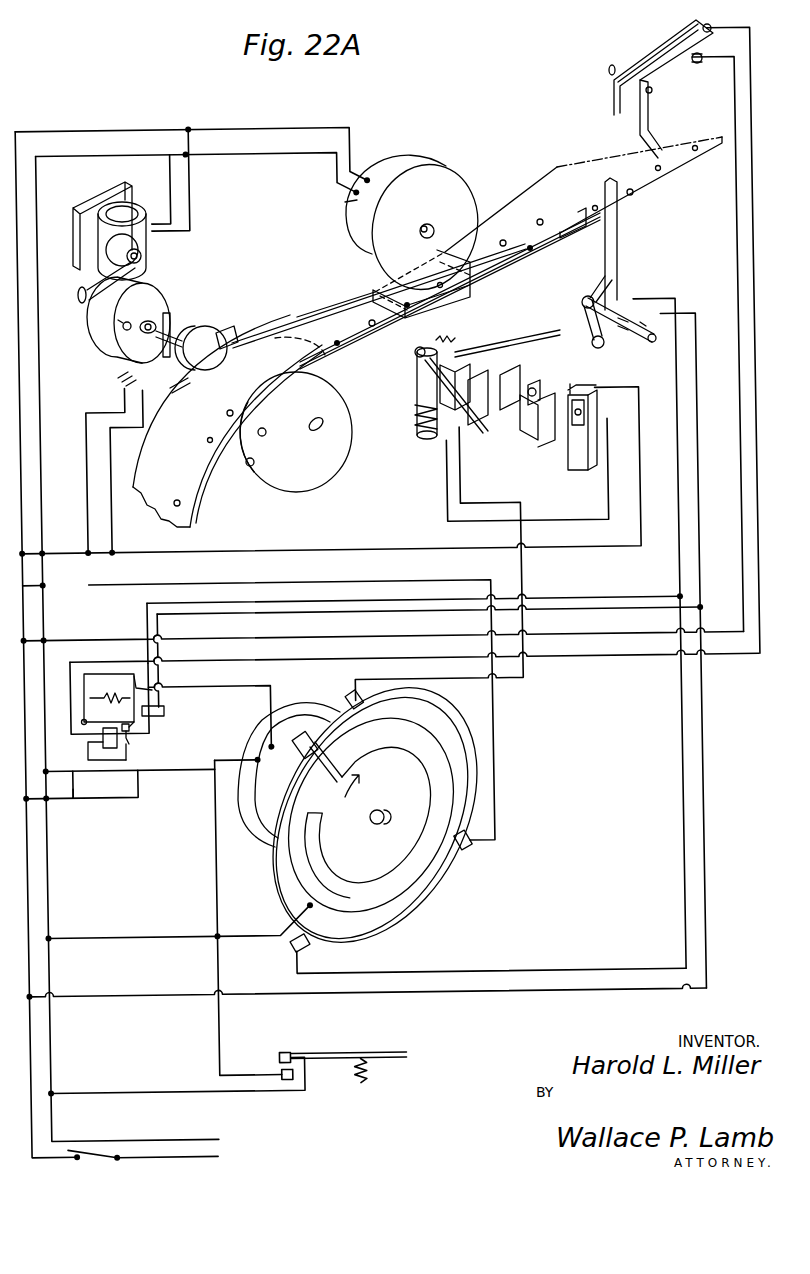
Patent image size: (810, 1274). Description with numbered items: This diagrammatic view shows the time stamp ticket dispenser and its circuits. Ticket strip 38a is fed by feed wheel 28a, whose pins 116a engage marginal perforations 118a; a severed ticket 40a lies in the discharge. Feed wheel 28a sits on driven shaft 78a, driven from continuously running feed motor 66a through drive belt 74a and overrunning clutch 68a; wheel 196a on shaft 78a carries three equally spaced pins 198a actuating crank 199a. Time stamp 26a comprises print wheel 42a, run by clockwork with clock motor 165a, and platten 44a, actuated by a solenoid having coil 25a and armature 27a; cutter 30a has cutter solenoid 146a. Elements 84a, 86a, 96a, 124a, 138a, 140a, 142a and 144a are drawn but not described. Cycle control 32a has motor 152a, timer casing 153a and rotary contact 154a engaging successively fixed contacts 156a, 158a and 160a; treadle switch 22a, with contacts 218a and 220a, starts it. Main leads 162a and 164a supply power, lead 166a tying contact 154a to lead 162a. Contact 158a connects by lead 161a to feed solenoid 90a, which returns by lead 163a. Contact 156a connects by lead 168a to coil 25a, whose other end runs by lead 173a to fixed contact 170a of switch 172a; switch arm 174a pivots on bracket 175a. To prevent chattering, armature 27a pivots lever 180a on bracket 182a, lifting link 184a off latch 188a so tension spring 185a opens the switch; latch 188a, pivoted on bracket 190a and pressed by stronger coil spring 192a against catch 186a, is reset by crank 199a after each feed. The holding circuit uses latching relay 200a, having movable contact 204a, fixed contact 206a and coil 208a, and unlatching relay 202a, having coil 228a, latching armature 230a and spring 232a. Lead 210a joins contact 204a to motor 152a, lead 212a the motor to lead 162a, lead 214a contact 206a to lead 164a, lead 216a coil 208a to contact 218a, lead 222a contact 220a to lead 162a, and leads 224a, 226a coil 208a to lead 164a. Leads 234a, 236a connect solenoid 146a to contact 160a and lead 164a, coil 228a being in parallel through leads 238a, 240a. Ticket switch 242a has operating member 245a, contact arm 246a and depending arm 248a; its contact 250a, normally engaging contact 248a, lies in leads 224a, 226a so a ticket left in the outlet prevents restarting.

The switch blade 22a is at (390, 1054).
The solenoid 25a is at (418, 424).
The rail 26a is at (474, 302).
The spring 27a is at (422, 452).
The disk 28a is at (330, 478).
The bracket 30a is at (622, 246).
The drum 32a is at (428, 884).
The curved segment 38a is at (208, 488).
The plate 40a is at (690, 170).
The motor 42a is at (432, 166).
The motor base 44a is at (372, 320).
The solenoid 66a is at (96, 236).
The disk 68a is at (144, 298).
The link 74a is at (78, 290).
The hub 78a is at (142, 337).
The gear 84a is at (178, 334).
The pin 86a is at (120, 340).
The contact fingers 90a is at (116, 382).
The shaft 96a is at (170, 318).
The pins 116a is at (250, 482).
The holes 118a is at (230, 410).
The bracket 124a is at (582, 228).
The arm 138a is at (582, 298).
The arm 140a is at (582, 316).
The link 142a is at (610, 300).
The pin 144a is at (652, 346).
The lever 146a is at (612, 332).
The bracket 152a is at (258, 744).
The contact arm 153a is at (300, 842).
The contact 154a is at (302, 733).
The contact 156a is at (350, 690).
The contact 158a is at (470, 846).
The contact 160a is at (292, 954).
The conductor 161a is at (306, 590).
The conductor 162a is at (250, 160).
The conductor 163a is at (86, 497).
The conductor 164a is at (238, 134).
The conductor 165a is at (346, 202).
The conductor 166a is at (157, 936).
The conductor 168a is at (534, 683).
The switch 170a is at (590, 402).
The switch blade 172a is at (596, 388).
The conductor 173a is at (565, 526).
The contact 174a is at (572, 382).
The conductor 175a is at (318, 556).
The latch 180a is at (449, 387).
The link 182a is at (470, 430).
The pawl 184a is at (516, 382).
The spring 185a is at (462, 340).
The pivot 186a is at (538, 392).
The rod 188a is at (490, 372).
The block 190a is at (528, 446).
The block 192a is at (542, 458).
The coupling 196a is at (235, 330).
The shaft 198a is at (250, 332).
The pulley 199a is at (402, 356).
The conductor 200a is at (132, 752).
The relay contact 202a is at (168, 712).
The relay 204a is at (88, 742).
The conductor 206a is at (134, 742).
The relay coil 208a is at (82, 784).
The conductor 210a is at (214, 690).
The conductor 212a is at (166, 770).
The conductor 214a is at (76, 802).
The conductor 216a is at (218, 862).
The contact 218a is at (278, 1076).
The contact 220a is at (288, 1052).
The conductor 222a is at (256, 1097).
The conductor 224a is at (758, 292).
The conductor 226a is at (742, 252).
The conductor 228a is at (156, 708).
The armature 230a is at (136, 730).
The resistor 232a is at (109, 698).
The conductor 234a is at (678, 768).
The conductor 236a is at (708, 734).
The conductor 238a is at (552, 600).
The conductor 240a is at (608, 606).
The lever 242a is at (616, 78).
The pin 245a is at (614, 86).
The arm 246a is at (666, 36).
The contact 248a is at (614, 112).
The contact 250a is at (708, 24).